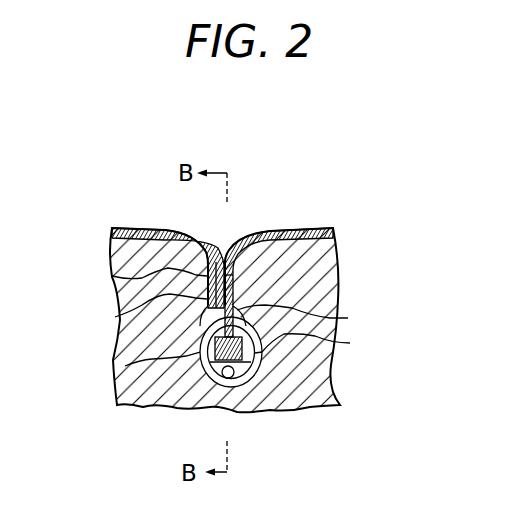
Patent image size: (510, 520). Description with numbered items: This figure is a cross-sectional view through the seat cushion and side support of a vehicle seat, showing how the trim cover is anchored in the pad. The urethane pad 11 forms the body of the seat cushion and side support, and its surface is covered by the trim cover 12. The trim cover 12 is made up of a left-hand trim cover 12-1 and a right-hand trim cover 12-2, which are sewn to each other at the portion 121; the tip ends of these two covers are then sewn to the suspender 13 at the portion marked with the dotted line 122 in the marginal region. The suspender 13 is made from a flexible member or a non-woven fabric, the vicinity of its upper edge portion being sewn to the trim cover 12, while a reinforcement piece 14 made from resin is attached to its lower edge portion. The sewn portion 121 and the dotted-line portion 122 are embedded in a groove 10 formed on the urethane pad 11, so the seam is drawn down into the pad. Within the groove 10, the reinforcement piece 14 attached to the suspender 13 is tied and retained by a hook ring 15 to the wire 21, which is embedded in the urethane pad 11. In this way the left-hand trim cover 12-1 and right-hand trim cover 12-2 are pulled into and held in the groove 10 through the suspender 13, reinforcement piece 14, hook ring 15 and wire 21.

The groove 10 is at (350, 343).
The urethane pad 11 is at (307, 368).
The trim cover 12 is at (289, 256).
The left-hand trim cover 12-1 is at (186, 230).
The right-hand trim cover 12-2 is at (298, 228).
The suspender 13 is at (348, 318).
The reinforcement piece 14 is at (125, 366).
The hook ring 15 is at (230, 387).
The wire 21 is at (243, 393).
The sewn portion 121 is at (112, 276).
The dotted-line sewn portion 122 is at (115, 317).